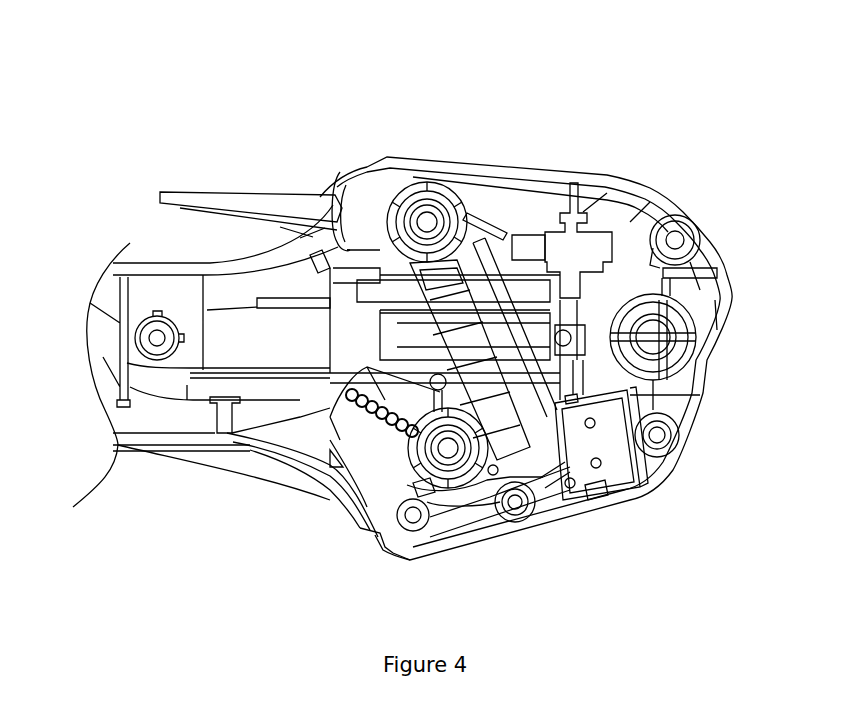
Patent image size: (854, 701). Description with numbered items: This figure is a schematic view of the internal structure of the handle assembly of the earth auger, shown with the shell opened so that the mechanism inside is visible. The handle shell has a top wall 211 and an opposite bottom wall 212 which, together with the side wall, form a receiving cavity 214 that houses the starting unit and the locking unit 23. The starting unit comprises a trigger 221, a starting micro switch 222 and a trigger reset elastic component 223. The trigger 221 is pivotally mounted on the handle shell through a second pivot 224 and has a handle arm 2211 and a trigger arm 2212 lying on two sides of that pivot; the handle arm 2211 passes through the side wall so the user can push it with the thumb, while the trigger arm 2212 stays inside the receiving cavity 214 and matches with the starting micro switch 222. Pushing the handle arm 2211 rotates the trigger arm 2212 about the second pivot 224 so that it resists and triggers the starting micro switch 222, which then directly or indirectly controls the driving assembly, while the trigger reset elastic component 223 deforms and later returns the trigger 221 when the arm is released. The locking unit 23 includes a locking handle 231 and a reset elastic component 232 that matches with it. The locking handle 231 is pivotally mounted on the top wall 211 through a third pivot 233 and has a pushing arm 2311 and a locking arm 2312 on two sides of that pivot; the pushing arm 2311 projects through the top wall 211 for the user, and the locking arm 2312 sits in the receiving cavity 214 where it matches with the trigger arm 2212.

The locking unit 23 is at (427, 25).
The top wall 211 is at (512, 165).
The bottom wall 212 is at (553, 523).
The receiving cavity 214 is at (310, 523).
The trigger 221 is at (313, 472).
The handle arm 2211 is at (255, 425).
The starting micro switch 222 is at (670, 458).
The trigger arm 2212 is at (597, 490).
The trigger reset elastic component 223 is at (413, 523).
The second pivot 224 is at (463, 455).
The locking handle 231 is at (320, 197).
The pushing arm 2311 is at (257, 200).
The locking arm 2312 is at (688, 360).
The reset elastic component 232 is at (487, 213).
The third pivot 233 is at (427, 200).